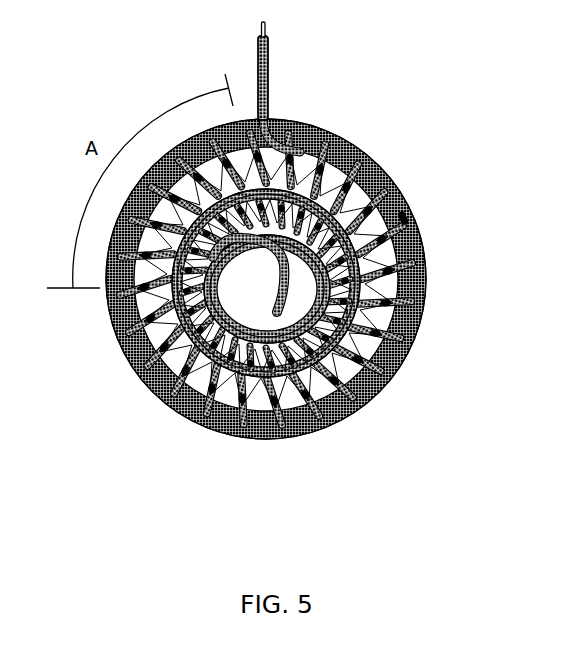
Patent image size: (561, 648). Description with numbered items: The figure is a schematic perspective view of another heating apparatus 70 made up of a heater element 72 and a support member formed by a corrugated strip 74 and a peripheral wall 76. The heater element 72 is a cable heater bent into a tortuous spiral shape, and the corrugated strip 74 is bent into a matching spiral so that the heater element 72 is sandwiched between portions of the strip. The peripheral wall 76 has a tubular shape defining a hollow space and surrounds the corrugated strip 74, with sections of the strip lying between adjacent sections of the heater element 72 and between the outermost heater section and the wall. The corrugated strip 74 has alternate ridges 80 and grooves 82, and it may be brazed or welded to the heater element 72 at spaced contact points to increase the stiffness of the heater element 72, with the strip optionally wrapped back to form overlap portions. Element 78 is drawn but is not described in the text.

The heating apparatus 70 is at (358, 82).
The heater element 72 is at (229, 279).
The corrugated strip 74 is at (465, 201).
The peripheral wall 76 is at (308, 279).
The lead wire 78 is at (358, 155).
The ridges 80 is at (305, 315).
The grooves 82 is at (259, 325).